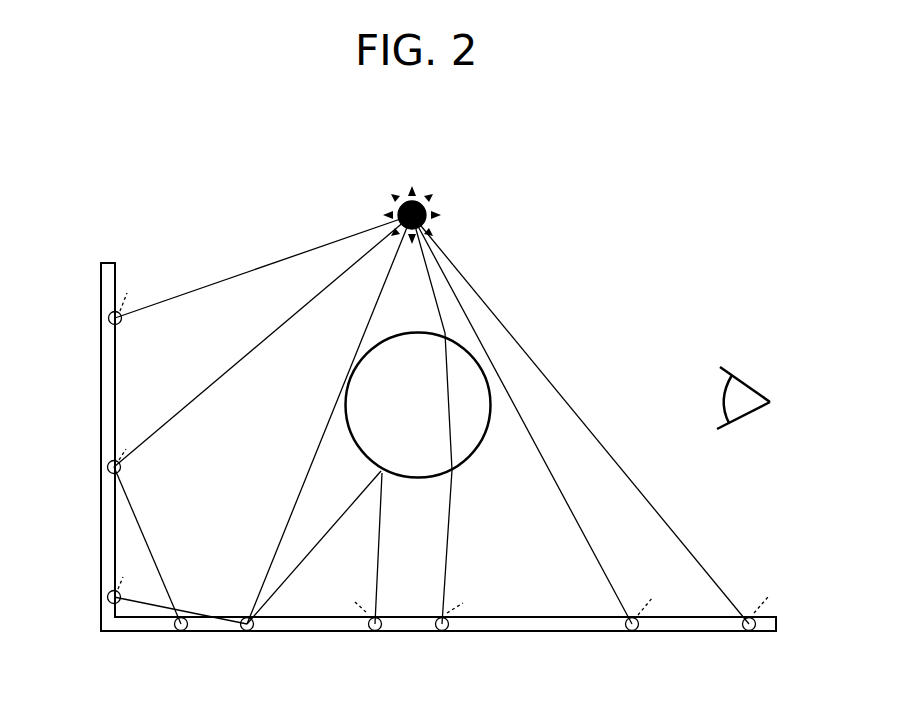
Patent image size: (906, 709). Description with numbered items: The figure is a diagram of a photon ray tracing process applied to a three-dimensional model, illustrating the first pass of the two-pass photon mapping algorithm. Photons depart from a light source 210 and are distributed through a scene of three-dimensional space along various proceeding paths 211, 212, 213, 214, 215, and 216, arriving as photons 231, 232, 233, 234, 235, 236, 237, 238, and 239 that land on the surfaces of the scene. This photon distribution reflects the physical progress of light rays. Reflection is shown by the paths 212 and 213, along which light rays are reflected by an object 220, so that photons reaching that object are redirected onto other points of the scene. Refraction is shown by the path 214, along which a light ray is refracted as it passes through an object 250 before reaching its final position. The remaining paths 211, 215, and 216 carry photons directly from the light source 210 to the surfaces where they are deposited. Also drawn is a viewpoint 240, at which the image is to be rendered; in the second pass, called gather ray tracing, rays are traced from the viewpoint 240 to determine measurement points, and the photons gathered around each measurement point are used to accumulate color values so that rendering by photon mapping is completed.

The light source 210 is at (413, 190).
The proceeding path 211 is at (292, 256).
The proceeding path 212 is at (283, 328).
The proceeding path 213 is at (308, 465).
The proceeding path 214 is at (433, 293).
The proceeding path 215 is at (583, 538).
The proceeding path 216 is at (527, 347).
The object 220 is at (107, 263).
The photon 231 is at (110, 314).
The photon 232 is at (109, 462).
The photon 233 is at (185, 631).
The photon 234 is at (109, 592).
The photon 235 is at (251, 631).
The photon 236 is at (379, 631).
The photon 237 is at (446, 631).
The photon 238 is at (637, 631).
The photon 239 is at (753, 631).
The viewpoint 240 is at (745, 382).
The object 250 is at (463, 465).